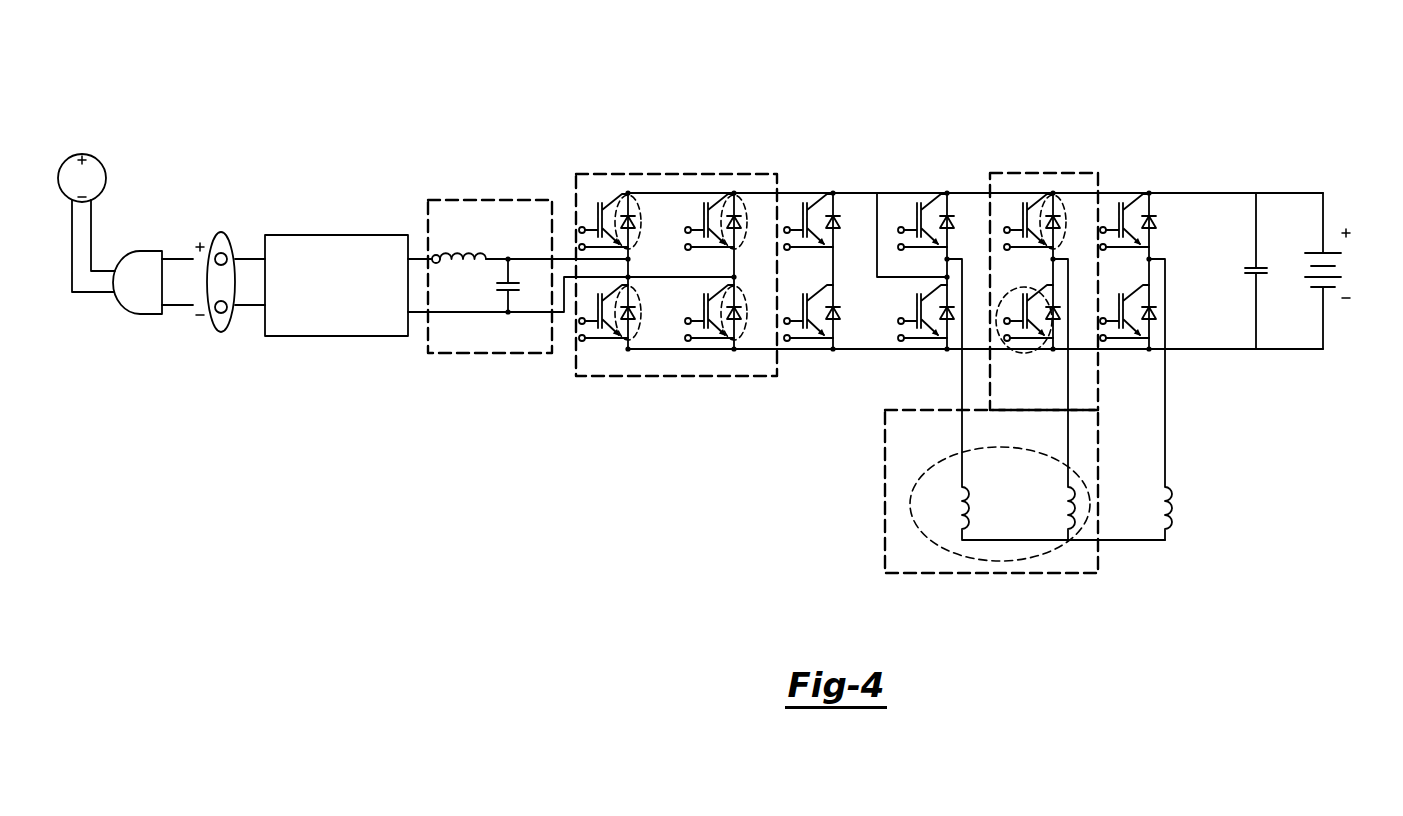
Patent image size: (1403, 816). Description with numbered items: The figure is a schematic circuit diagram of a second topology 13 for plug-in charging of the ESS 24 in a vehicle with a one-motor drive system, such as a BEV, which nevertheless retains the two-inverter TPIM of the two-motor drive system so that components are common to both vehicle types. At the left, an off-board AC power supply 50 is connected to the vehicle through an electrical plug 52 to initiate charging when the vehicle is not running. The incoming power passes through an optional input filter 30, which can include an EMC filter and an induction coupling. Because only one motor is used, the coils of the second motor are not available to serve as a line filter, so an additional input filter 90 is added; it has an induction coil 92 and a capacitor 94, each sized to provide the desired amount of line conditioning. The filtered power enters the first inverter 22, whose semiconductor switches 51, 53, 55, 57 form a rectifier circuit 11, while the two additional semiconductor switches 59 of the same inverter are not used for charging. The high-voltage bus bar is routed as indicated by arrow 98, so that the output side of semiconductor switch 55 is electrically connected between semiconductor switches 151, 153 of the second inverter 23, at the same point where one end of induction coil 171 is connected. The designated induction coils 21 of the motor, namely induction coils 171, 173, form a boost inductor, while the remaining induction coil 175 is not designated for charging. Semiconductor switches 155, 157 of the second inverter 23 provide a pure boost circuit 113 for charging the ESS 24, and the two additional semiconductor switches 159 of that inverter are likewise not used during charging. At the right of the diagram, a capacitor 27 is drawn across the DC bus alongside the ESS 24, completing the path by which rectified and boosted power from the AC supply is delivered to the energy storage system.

The second topology 13 is at (540, 84).
The off-board AC power supply 50 is at (86, 223).
The electrical plug 52 is at (189, 282).
The input filter 30 is at (336, 285).
The additional input filter 90 is at (491, 199).
The induction coil 92 is at (465, 249).
The capacitor 94 is at (494, 279).
The rectifier circuit 11 is at (605, 377).
The inverter 22 is at (628, 160).
The inverter 23 is at (947, 163).
The semiconductor switch 51 is at (625, 222).
The semiconductor switch 53 is at (625, 313).
The semiconductor switch 55 is at (730, 222).
The semiconductor switch 57 is at (727, 304).
The semiconductor switches 59 is at (827, 267).
The arrow 98 is at (888, 283).
The semiconductor switch 151 is at (947, 222).
The semiconductor switch 153 is at (947, 313).
The semiconductor switch 155 is at (1051, 222).
The semiconductor switch 157 is at (1045, 291).
The semiconductor switches 159 is at (1149, 267).
The designated induction coils 21 is at (910, 503).
The induction coil 171 is at (1044, 399).
The induction coil 173 is at (1051, 399).
The induction coil 175 is at (1140, 399).
The pure boost circuit 113 is at (915, 573).
The ESS 24 is at (1340, 271).
The DC link capacitor 27 is at (1260, 274).